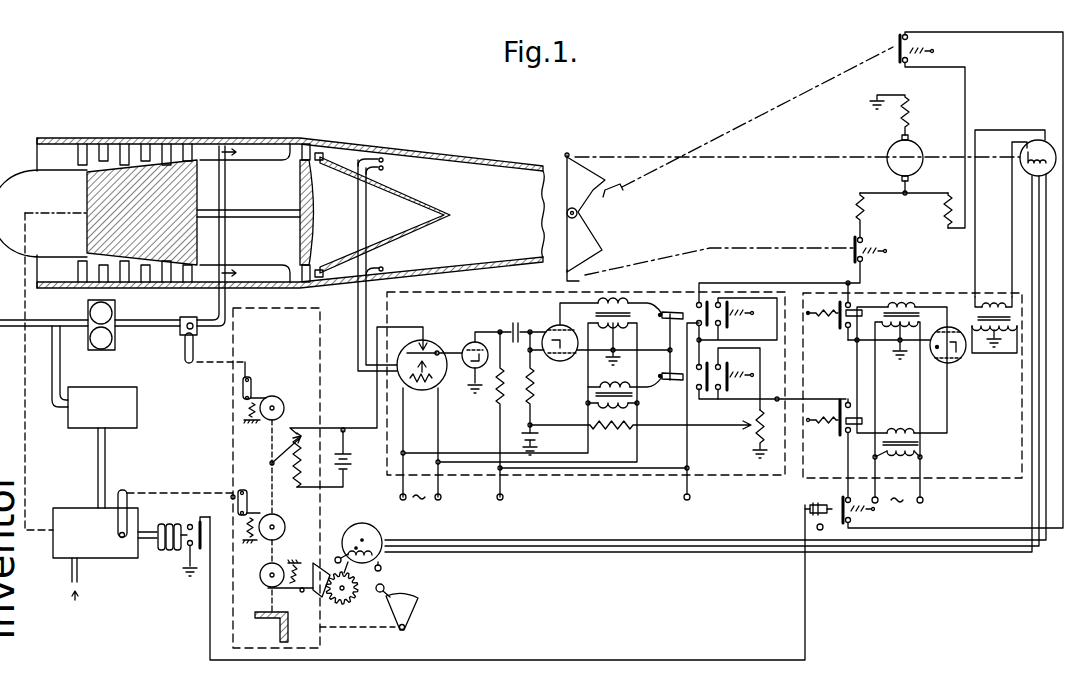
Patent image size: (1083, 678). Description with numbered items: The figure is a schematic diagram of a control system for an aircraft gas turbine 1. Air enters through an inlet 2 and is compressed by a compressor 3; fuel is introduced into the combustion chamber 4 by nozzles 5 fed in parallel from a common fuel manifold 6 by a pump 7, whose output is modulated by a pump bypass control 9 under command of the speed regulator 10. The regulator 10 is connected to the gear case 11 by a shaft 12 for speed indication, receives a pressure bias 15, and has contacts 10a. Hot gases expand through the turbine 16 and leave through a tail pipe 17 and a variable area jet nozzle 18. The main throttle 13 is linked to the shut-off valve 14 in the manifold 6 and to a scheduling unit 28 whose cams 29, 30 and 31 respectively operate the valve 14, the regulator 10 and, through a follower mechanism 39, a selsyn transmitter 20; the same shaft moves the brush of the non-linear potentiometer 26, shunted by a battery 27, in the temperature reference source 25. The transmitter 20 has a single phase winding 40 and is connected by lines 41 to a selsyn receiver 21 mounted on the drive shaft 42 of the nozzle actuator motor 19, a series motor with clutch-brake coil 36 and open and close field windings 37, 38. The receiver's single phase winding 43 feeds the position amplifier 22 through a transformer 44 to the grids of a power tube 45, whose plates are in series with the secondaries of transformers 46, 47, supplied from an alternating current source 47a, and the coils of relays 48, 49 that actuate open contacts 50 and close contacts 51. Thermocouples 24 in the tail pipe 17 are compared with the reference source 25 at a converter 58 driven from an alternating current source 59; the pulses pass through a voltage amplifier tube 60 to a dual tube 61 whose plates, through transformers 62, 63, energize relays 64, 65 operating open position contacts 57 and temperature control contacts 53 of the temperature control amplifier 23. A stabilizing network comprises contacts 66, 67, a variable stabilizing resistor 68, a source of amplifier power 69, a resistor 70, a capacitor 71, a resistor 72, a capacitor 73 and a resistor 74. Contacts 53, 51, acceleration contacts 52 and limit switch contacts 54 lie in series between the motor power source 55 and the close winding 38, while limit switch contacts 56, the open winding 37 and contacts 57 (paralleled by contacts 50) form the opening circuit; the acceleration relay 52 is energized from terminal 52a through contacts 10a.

The aircraft gas turbine 1 is at (418, 128).
The inlet 2 is at (37, 157).
The compressor 3 is at (172, 152).
The combustion chamber 4 is at (262, 150).
The nozzles 5 is at (224, 144).
The fuel manifold 6 is at (150, 325).
The pump 7 is at (88, 307).
The pump bypass control 9 is at (100, 387).
The speed regulator 10 is at (72, 508).
The contacts 10a is at (183, 550).
The gear case 11 is at (18, 250).
The shaft 12 is at (27, 446).
The main throttle 13 is at (411, 592).
The shut-off valve 14 is at (198, 332).
The pressure bias 15 is at (80, 571).
The turbine 16 is at (306, 144).
The tail pipe 17 is at (471, 158).
The jet nozzle 18 is at (595, 168).
The nozzle actuator motor 19 is at (913, 147).
The selsyn transmitter 20 is at (366, 524).
The selsyn receiver 21 is at (715, 363).
The nozzle position amplifier unit 22 is at (990, 440).
The temperature control amplifier 23 is at (720, 450).
The thermocouples 24 is at (384, 167).
The temperature reference voltage source 25 is at (291, 467).
The non-linear potentiometer 26 is at (358, 407).
The battery 27 is at (350, 470).
The scheduling unit 28 is at (255, 576).
The cam 29 is at (285, 401).
The cam 30 is at (286, 526).
The cam 31 is at (275, 560).
The series clutch-brake coil 36 is at (910, 103).
The open field winding 37 is at (866, 212).
The close field winding 38 is at (940, 212).
The follower mechanism 39 is at (294, 596).
The single phase winding 40 is at (382, 556).
The lines 41 is at (612, 554).
The drive shaft 42 is at (811, 157).
The single phase winding 43 is at (1037, 140).
The transformer 44 is at (991, 303).
The power tube 45 is at (962, 358).
The transformer 46 is at (902, 303).
The transformer 47 is at (897, 430).
The source of alternating current 47a is at (901, 491).
The relay 48 is at (862, 310).
The relay 49 is at (861, 425).
The open contacts 50 is at (836, 309).
The close contacts 51 is at (836, 434).
The acceleration contacts 52 is at (843, 499).
The terminal 52a is at (822, 531).
The temperature control contacts 53 is at (707, 392).
The limit switch contacts 54 is at (898, 43).
The actuator motor power source 55 is at (690, 497).
The limit switch contacts 56 is at (866, 243).
The open position contacts 57 is at (696, 302).
The converter 58 is at (425, 344).
The source of alternating current 59 is at (420, 506).
The voltage amplifier tube 60 is at (471, 343).
The dual tube 61 is at (550, 327).
The transformer 62 is at (595, 308).
The transformer 63 is at (595, 395).
The relay 64 is at (673, 319).
The relay 65 is at (670, 382).
The contacts 66 is at (746, 309).
The contacts 67 is at (732, 370).
The variable stabilizing resistor 68 is at (748, 434).
The source of amplifier power 69 is at (503, 497).
The resistor 70 is at (496, 402).
The capacitor 71 is at (515, 323).
The resistor 72 is at (536, 398).
The capacitor 73 is at (540, 437).
The resistor 74 is at (640, 435).